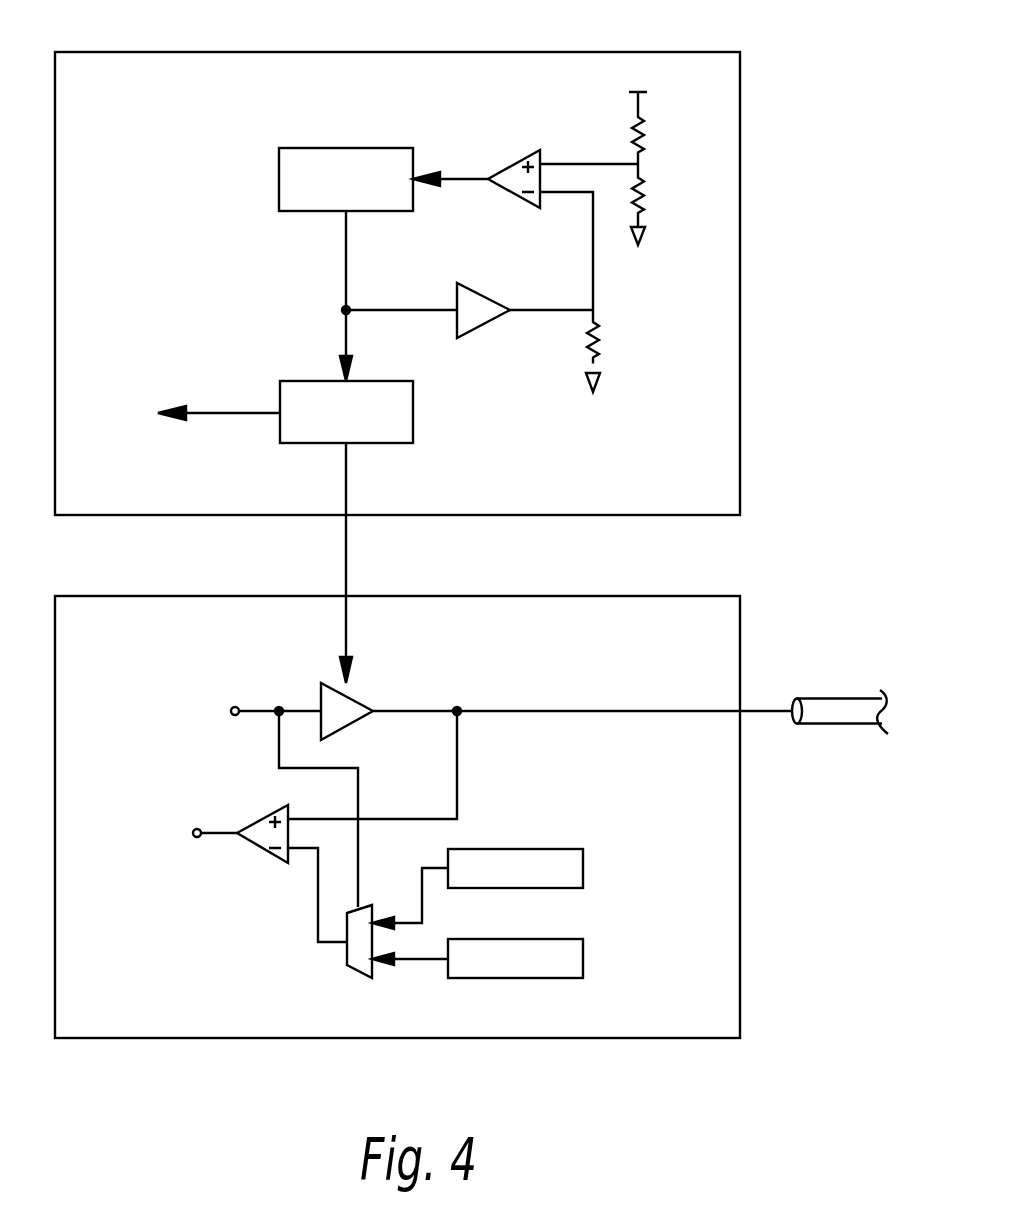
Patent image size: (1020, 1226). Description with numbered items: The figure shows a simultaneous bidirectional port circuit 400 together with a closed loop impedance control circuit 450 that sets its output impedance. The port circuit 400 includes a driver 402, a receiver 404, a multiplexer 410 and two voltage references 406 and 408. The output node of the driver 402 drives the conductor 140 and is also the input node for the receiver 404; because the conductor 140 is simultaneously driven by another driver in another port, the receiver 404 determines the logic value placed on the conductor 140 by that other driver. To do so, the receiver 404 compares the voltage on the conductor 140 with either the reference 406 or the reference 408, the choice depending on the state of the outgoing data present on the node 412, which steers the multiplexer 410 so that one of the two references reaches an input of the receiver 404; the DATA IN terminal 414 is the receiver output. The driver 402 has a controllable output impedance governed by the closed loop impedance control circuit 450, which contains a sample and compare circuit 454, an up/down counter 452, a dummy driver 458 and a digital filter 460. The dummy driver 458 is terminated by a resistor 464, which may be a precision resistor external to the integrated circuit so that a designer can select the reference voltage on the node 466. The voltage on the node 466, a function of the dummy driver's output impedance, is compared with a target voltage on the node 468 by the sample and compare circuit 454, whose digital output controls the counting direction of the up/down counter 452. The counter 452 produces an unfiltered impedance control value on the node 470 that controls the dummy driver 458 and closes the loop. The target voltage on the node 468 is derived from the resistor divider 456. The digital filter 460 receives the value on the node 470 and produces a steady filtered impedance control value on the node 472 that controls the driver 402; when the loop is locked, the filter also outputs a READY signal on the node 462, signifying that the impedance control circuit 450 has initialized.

The conductor 140 is at (820, 697).
The simultaneous bidirectional port circuit 400 is at (167, 596).
The driver 402 is at (317, 697).
The receiver 404 is at (261, 849).
The voltage reference 406 is at (575, 847).
The voltage reference 408 is at (575, 938).
The multiplexer 410 is at (355, 976).
The node 412 is at (228, 707).
The data in terminal 414 is at (190, 828).
The closed loop impedance control circuit 450 is at (150, 52).
The up/down counter 452 is at (300, 147).
The sample and compare circuit 454 is at (507, 165).
The resistor divider 456 is at (644, 124).
The dummy driver 458 is at (456, 296).
The digital filter 460 is at (396, 381).
The node 462 is at (208, 413).
The resistor 464 is at (588, 337).
The node 466 is at (535, 310).
The node 468 is at (547, 162).
The node 470 is at (346, 254).
The node 472 is at (348, 472).